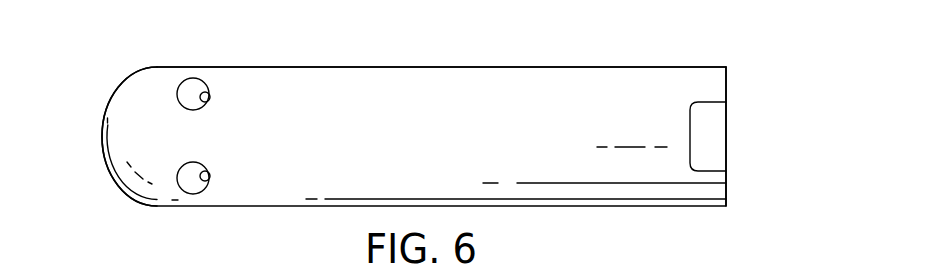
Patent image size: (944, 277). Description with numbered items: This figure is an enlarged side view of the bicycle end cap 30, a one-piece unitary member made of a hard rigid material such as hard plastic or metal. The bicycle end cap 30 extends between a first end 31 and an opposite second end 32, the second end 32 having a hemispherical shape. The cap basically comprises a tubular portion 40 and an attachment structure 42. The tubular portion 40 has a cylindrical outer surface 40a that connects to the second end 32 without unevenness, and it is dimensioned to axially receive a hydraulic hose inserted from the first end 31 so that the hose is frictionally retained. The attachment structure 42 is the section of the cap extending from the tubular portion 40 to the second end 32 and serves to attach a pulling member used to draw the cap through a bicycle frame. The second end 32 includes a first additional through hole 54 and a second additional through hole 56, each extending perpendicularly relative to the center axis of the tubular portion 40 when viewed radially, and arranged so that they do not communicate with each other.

The bicycle end cap 30 is at (327, 52).
The first end 31 is at (727, 87).
The second end 32 is at (113, 92).
The tubular portion 40 is at (518, 67).
The cylindrical outer surface 40a is at (647, 110).
The attachment structure 42 is at (212, 67).
The first additional through hole 54 is at (210, 96).
The second additional through hole 56 is at (210, 177).